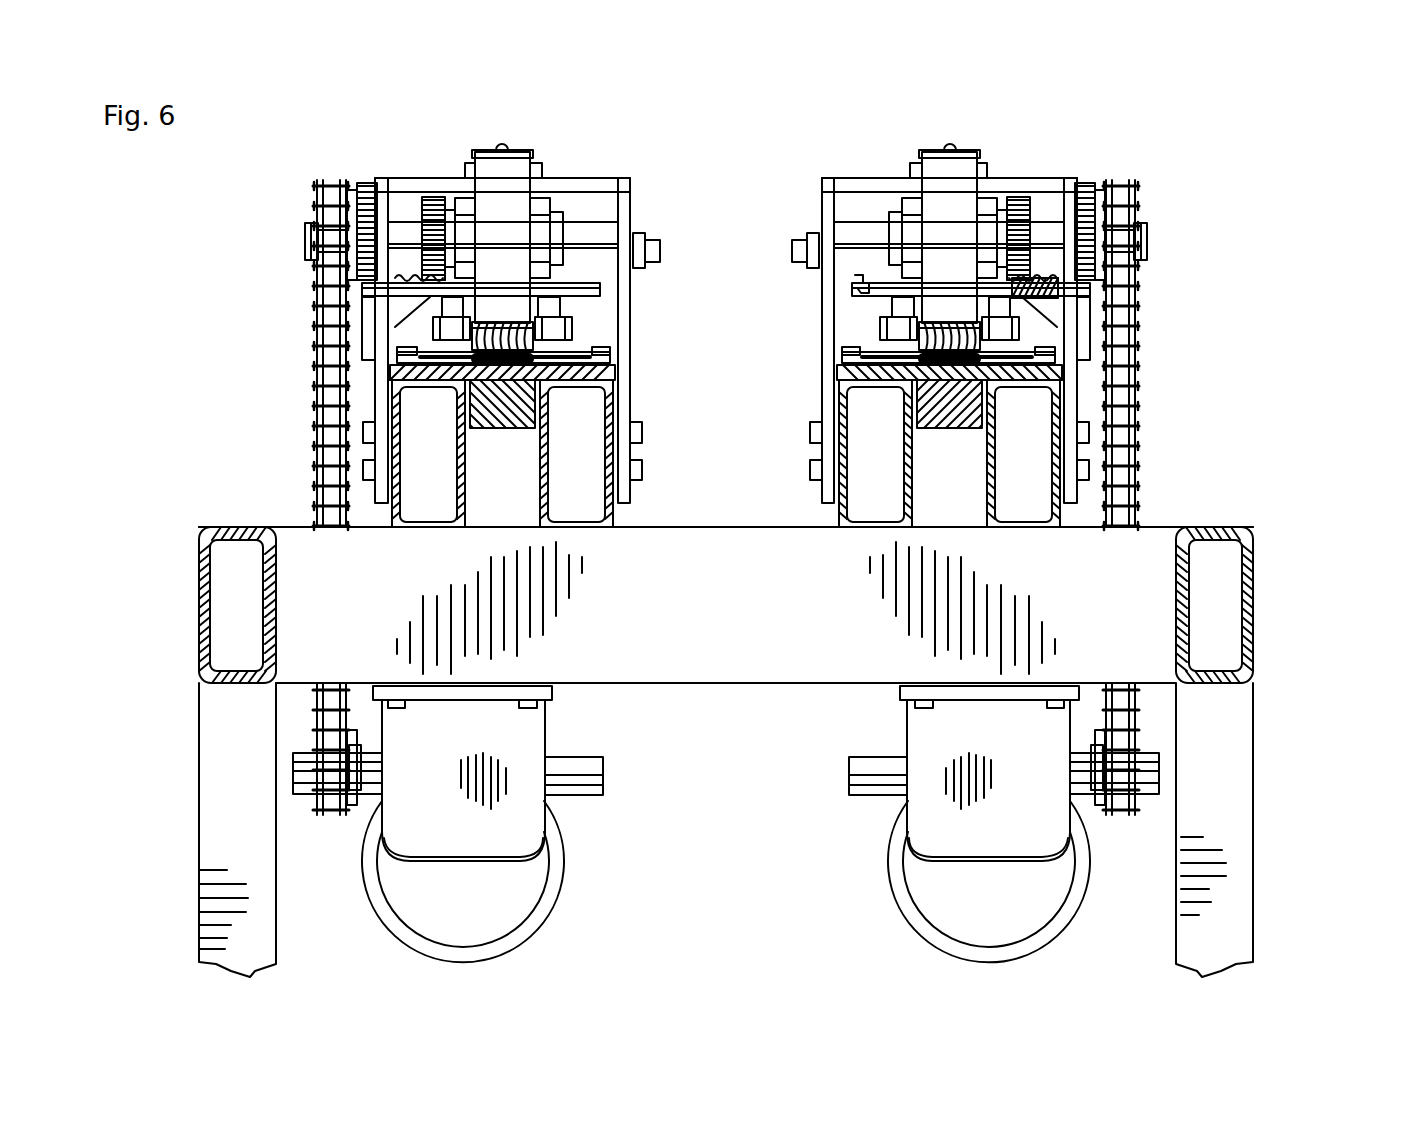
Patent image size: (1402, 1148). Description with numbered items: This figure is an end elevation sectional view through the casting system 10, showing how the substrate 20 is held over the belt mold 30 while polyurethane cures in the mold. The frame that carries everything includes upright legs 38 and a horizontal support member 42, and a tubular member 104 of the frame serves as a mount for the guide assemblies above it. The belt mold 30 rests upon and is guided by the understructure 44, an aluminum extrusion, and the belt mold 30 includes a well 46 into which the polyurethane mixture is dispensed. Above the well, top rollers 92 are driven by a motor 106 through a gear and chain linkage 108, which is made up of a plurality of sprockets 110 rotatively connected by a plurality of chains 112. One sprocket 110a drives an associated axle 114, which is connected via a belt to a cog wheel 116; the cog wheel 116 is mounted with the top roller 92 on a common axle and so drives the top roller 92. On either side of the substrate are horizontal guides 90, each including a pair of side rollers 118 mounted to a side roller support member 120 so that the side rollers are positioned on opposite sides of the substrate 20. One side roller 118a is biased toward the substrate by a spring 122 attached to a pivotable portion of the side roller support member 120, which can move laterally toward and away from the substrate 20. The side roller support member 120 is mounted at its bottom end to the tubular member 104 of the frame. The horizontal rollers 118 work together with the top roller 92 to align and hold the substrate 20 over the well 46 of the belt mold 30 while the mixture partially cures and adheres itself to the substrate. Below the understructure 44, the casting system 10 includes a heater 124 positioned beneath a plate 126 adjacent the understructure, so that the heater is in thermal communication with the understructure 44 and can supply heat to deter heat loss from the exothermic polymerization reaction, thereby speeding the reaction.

The casting system 10 is at (1315, 98).
The substrate 20 is at (493, 330).
The belt mold 30 is at (880, 345).
The legs 38 is at (1255, 815).
The horizontal support member 42 is at (1255, 625).
The understructure 44 is at (870, 360).
The well 46 is at (905, 366).
The horizontal guides 90 is at (572, 335).
The top roller 92 is at (523, 151).
The tubular member 104 is at (535, 520).
The motor 106 is at (570, 876).
The gear and chain linkage 108 is at (310, 475).
The sprockets 110 is at (313, 798).
The sprocket 110a is at (338, 153).
The chains 112 is at (318, 427).
The axle 114 is at (397, 222).
The cog wheel 116 is at (433, 198).
The side rollers 118 is at (585, 342).
The side roller 118a is at (440, 332).
The side roller support member 120 is at (587, 297).
The spring 122 is at (1045, 280).
The heater 124 is at (520, 430).
The plate 126 is at (615, 375).